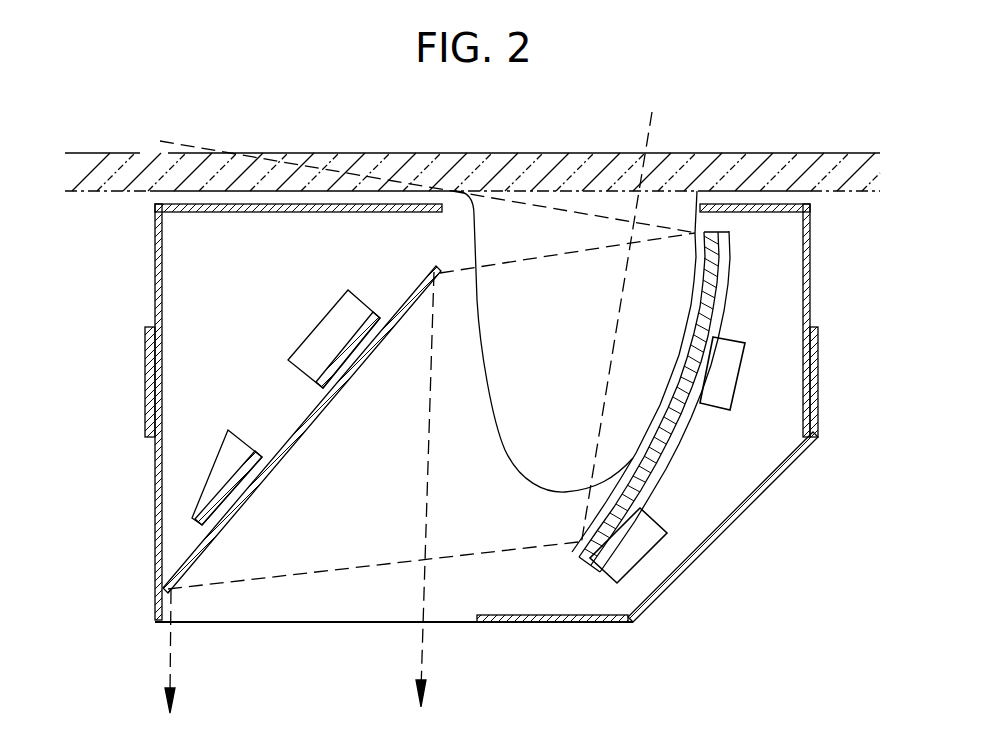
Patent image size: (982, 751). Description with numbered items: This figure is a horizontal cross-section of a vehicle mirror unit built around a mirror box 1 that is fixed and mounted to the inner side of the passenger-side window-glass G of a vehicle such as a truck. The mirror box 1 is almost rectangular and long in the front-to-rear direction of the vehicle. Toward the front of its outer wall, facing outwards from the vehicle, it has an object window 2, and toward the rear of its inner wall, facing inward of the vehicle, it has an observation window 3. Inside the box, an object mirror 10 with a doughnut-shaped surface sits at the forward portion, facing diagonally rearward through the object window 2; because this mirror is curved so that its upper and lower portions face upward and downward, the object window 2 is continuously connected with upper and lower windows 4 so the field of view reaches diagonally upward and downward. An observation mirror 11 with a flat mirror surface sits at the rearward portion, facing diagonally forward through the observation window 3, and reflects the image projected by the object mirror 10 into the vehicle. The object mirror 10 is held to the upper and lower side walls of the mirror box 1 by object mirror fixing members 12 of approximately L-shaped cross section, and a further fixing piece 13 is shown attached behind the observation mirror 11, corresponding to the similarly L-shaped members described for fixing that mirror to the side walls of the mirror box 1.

The mirror box 1 is at (682, 568).
The object window 2 is at (697, 207).
The observation window 3 is at (477, 618).
The upper and lower windows 4 is at (645, 447).
The object mirror 10 is at (678, 398).
The observation mirror 11 is at (308, 423).
The object mirror fixing members 12 is at (728, 370).
The block 13 is at (313, 348).
The window-glass G is at (150, 168).